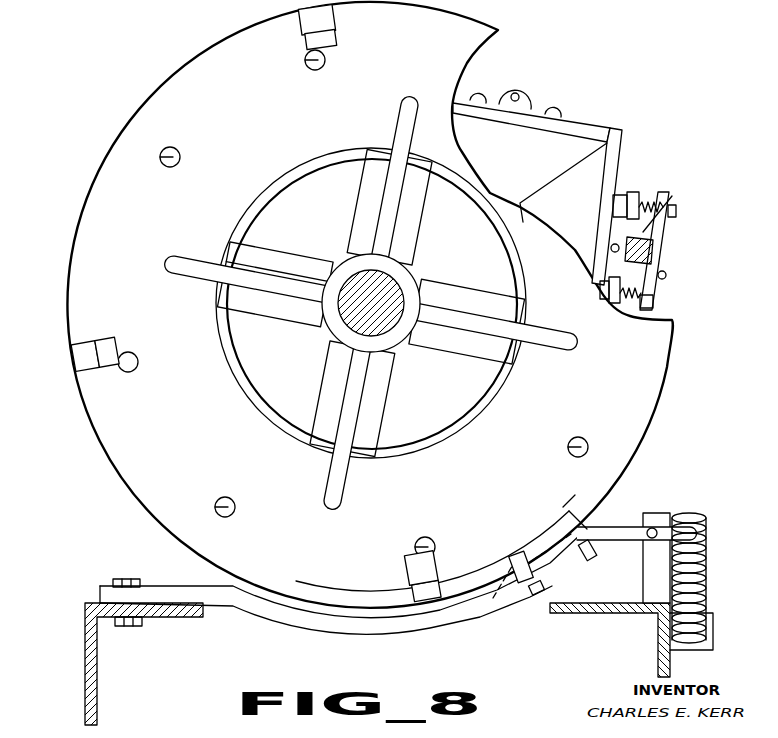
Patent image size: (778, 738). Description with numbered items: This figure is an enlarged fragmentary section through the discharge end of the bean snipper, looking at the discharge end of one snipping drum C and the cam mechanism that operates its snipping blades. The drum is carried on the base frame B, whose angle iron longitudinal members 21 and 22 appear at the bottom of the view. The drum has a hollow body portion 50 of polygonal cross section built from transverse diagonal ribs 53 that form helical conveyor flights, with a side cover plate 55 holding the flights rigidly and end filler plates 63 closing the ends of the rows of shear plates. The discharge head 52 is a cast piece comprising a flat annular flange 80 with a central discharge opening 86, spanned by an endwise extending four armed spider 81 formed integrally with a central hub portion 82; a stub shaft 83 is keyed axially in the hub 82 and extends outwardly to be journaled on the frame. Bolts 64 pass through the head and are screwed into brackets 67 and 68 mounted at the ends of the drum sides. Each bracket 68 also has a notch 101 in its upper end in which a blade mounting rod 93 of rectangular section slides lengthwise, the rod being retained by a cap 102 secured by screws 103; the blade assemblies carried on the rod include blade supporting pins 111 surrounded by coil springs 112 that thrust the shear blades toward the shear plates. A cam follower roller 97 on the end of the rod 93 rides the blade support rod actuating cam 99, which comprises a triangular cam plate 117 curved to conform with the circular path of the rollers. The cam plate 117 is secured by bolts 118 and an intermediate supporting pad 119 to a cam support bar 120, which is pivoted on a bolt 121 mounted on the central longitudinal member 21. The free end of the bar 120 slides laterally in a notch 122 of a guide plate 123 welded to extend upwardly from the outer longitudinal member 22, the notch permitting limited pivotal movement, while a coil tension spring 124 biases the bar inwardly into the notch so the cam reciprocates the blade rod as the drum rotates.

The angle iron longitudinal member 21 is at (100, 661).
The outer longitudinal frame member 22 is at (660, 672).
The base frame B is at (84, 688).
The snipping drum C is at (592, 125).
The hollow body portion 50 is at (568, 125).
The discharge head 52 is at (132, 293).
The transverse diagonal rib 53 is at (527, 169).
The side cover plate 55 is at (530, 119).
The end filler plate 63 is at (614, 160).
The bolt 64 is at (182, 157).
The bracket 67 is at (516, 90).
The bracket 68 is at (652, 230).
The annular flange 80 is at (164, 427).
The four armed spider 81 is at (243, 304).
The hub portion 82 is at (340, 330).
The stub shaft 83 is at (372, 322).
The central discharge opening 86 is at (417, 400).
The blade mounting rod 93 is at (325, 37).
The cam follower roller 97 is at (335, 14).
The blade support rod actuating cam 99 is at (488, 566).
The notch 101 is at (640, 238).
The cap 102 is at (660, 262).
The screw 103 is at (673, 225).
The blade supporting pin 111 is at (673, 210).
The coil spring 112 is at (656, 203).
The triangular cam plate 117 is at (548, 522).
The bolt 118 is at (542, 591).
The intermediate supporting pad 119 is at (582, 531).
The cam support bar 120 is at (332, 626).
The bolt 121 is at (130, 582).
The notch 122 is at (652, 528).
The guide plate 123 is at (655, 565).
The coil tension spring 124 is at (699, 536).